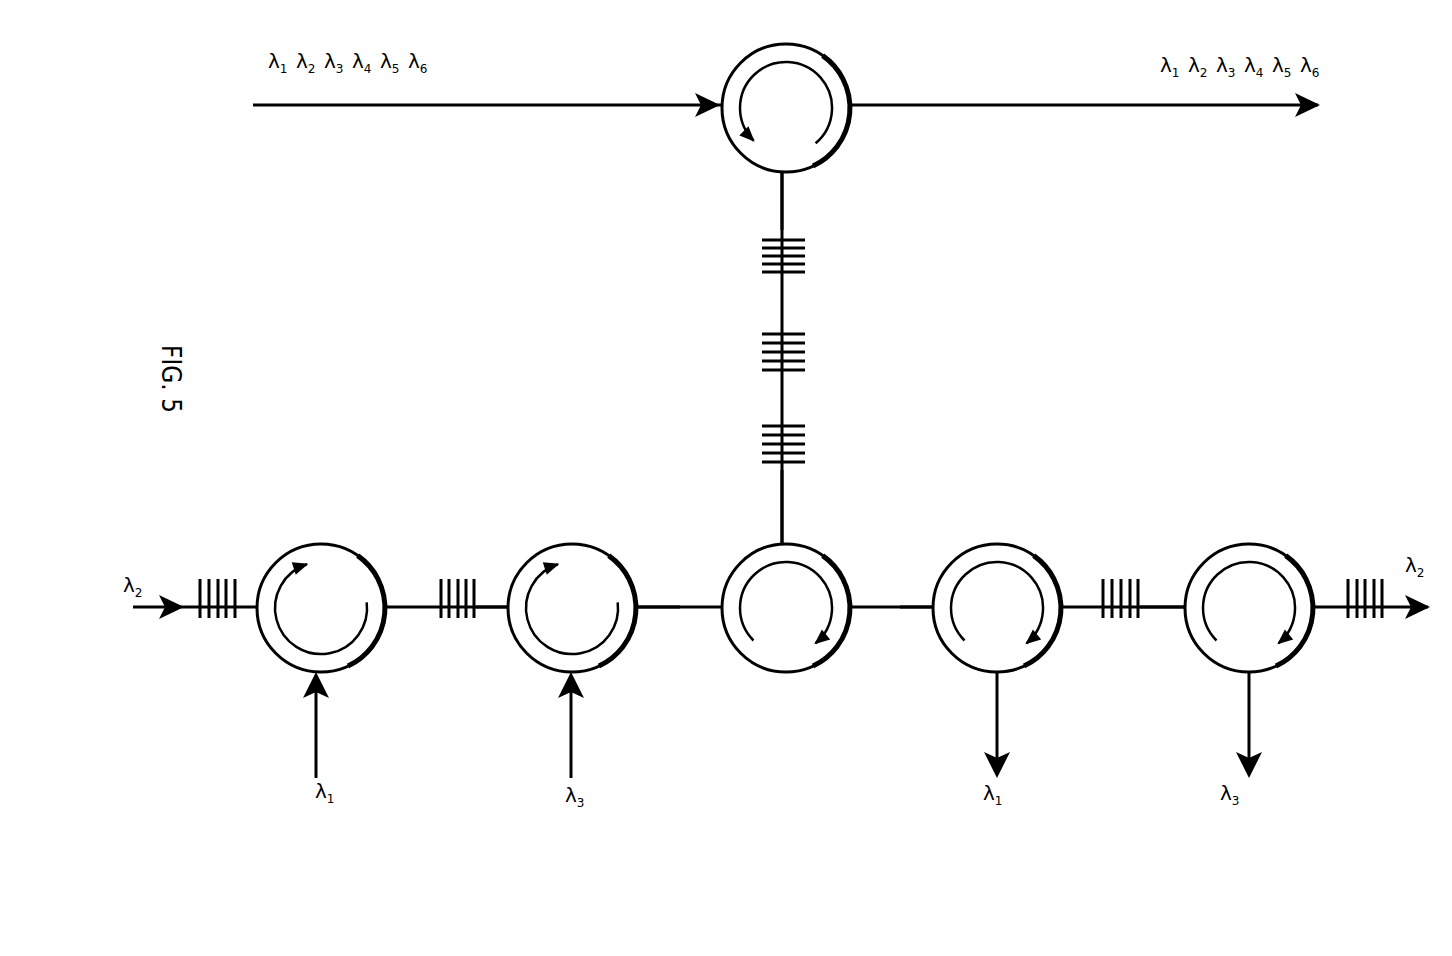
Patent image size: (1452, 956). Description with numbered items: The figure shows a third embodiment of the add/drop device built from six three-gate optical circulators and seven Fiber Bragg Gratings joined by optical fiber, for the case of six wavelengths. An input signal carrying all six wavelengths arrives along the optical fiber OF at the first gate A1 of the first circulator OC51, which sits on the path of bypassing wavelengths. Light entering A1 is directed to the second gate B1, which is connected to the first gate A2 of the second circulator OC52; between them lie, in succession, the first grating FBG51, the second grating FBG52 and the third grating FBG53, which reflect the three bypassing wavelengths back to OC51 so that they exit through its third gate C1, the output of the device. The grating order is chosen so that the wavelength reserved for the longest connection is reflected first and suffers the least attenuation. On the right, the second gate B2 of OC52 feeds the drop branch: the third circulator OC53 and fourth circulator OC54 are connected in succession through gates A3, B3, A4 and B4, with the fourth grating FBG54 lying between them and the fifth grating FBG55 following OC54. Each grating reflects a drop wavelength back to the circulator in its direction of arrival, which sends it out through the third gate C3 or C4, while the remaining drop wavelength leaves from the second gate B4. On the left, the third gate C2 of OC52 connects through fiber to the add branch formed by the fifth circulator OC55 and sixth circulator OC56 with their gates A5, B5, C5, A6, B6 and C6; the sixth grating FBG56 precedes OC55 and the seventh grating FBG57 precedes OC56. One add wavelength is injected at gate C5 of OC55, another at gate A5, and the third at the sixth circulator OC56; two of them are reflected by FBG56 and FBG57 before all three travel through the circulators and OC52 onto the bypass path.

The first circulator OC51 is at (786, 88).
The second circulator OC52 is at (772, 594).
The third circulator OC53 is at (997, 579).
The fourth circulator OC54 is at (1249, 579).
The fifth circulator OC55 is at (321, 580).
The sixth circulator OC56 is at (572, 580).
The first grating FBG51 is at (837, 256).
The second grating FBG52 is at (837, 352).
The third grating FBG53 is at (837, 444).
The fourth grating FBG54 is at (1113, 627).
The fifth grating FBG55 is at (1370, 626).
The sixth grating FBG56 is at (223, 629).
The seventh grating FBG57 is at (463, 630).
The optical fiber OF is at (560, 103).
The first gate of the first circulator A1 is at (643, 90).
The second gate of the first circulator B1 is at (765, 201).
The third gate of the first circulator C1 is at (1085, 92).
The first gate of the second circulator A2 is at (798, 507).
The second gate of the second circulator B2 is at (891, 623).
The third gate of the second circulator C2 is at (679, 623).
The first gate of the third circulator A3 is at (915, 585).
The second gate of the third circulator B3 is at (1122, 585).
The third gate of the third circulator C3 is at (1006, 725).
The first gate of the fourth circulator A4 is at (1163, 622).
The second gate of the fourth circulator B4 is at (1368, 589).
The third gate of the fourth circulator C4 is at (1232, 725).
The first gate of the fifth circulator A5 is at (197, 584).
The second gate of the fifth circulator B5 is at (447, 584).
The third gate of the fifth circulator C5 is at (305, 725).
The first gate of the sixth circulator A6 is at (492, 584).
The second gate of the sixth circulator B6 is at (658, 587).
The third gate of the sixth circulator C6 is at (557, 724).